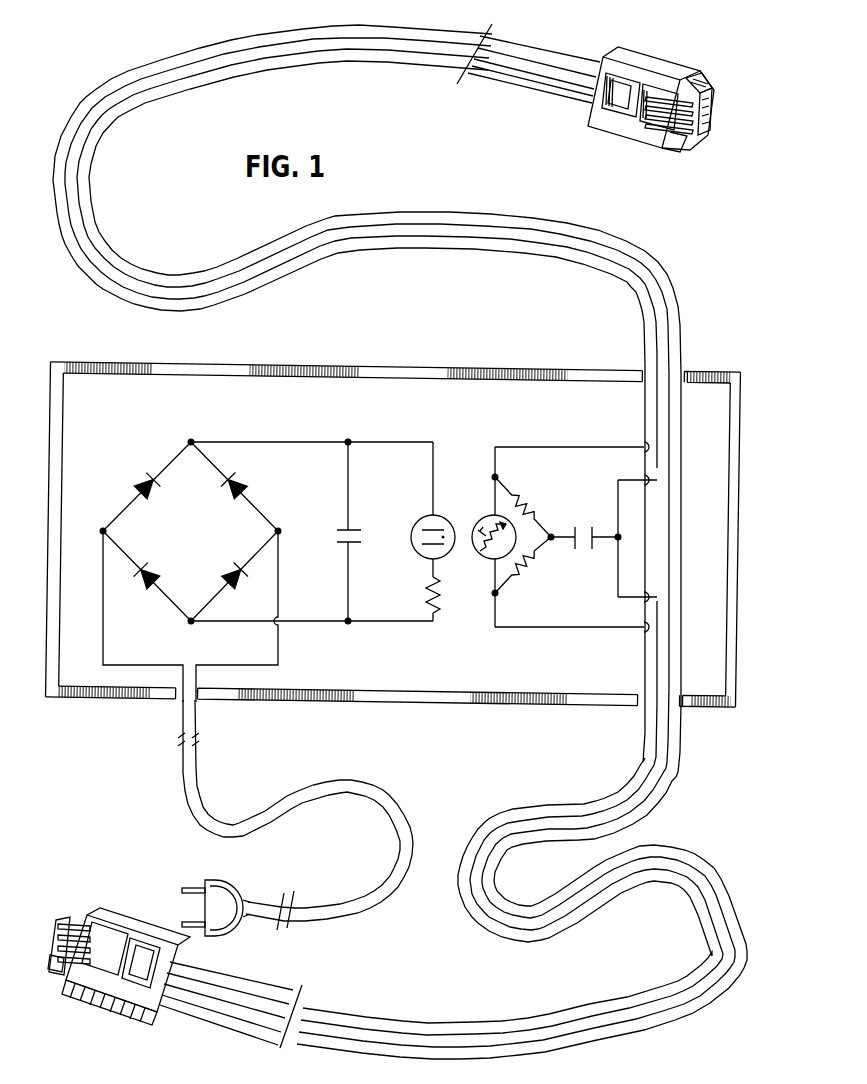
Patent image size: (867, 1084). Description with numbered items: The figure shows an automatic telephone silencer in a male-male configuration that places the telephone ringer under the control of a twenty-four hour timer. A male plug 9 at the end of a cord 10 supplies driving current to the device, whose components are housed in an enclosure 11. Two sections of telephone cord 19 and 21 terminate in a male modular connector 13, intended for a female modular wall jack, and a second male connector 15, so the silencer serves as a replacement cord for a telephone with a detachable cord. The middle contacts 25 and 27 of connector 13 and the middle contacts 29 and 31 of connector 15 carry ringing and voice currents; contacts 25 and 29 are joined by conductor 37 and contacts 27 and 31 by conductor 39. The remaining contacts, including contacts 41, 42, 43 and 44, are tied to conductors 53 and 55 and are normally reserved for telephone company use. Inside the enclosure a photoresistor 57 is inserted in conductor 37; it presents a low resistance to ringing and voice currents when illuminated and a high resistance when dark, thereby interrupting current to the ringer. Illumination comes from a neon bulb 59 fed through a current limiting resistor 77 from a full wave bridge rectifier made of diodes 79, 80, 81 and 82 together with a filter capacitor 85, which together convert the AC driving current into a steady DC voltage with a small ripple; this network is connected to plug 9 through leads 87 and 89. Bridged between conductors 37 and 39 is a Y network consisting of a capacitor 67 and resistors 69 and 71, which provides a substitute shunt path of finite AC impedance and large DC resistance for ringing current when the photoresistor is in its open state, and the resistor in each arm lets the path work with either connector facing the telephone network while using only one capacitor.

The male plug 9 is at (216, 880).
The cord 10 is at (262, 897).
The enclosure 11 is at (416, 706).
The male modular connector 13 is at (665, 109).
The male connector 15 is at (111, 972).
The telephone cord 19 is at (538, 44).
The telephone cord 21 is at (218, 976).
The contact 25 is at (712, 99).
The contact 27 is at (694, 128).
The contact 29 is at (62, 929).
The contact 31 is at (56, 962).
The conductor 37 is at (330, 28).
The conductor 39 is at (171, 70).
The contact 41 is at (665, 95).
The contact 42 is at (664, 148).
The contact 43 is at (88, 922).
The contact 44 is at (80, 990).
The conductor 53 is at (416, 30).
The conductor 55 is at (407, 68).
The photoresistor 57 is at (484, 549).
The neon bulb 59 is at (447, 515).
The capacitor 67 is at (592, 548).
The resistor 69 is at (527, 507).
The resistor 71 is at (527, 571).
The current limiting resistor 77 is at (425, 586).
The diode 79 is at (237, 588).
The diode 80 is at (246, 477).
The diode 81 is at (142, 478).
The diode 82 is at (136, 586).
The capacitor 85 is at (354, 528).
The lead 87 is at (182, 766).
The lead 89 is at (199, 773).